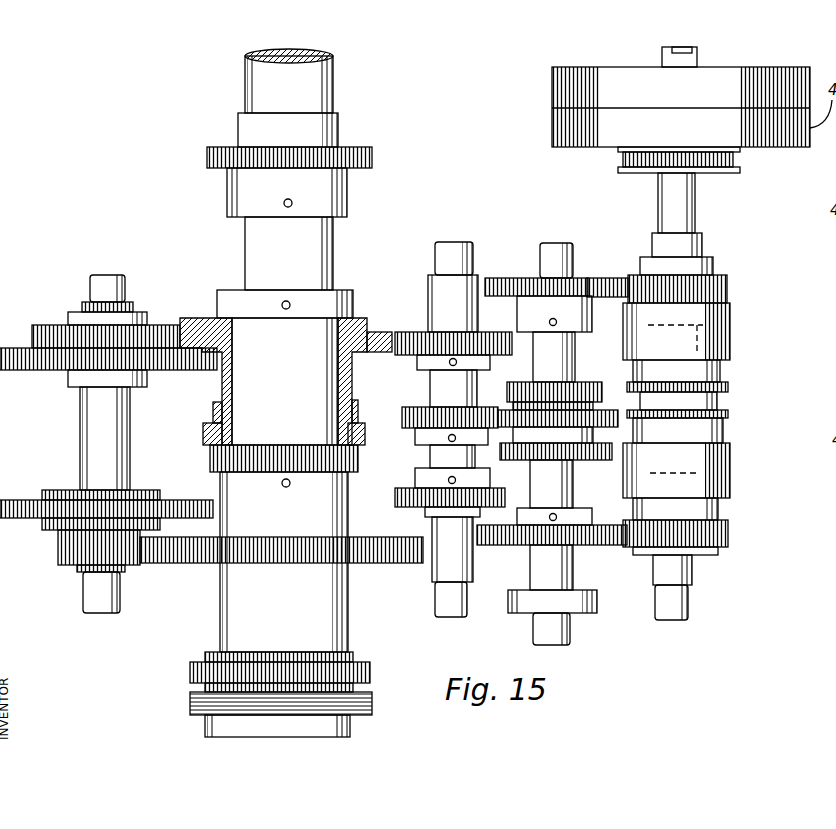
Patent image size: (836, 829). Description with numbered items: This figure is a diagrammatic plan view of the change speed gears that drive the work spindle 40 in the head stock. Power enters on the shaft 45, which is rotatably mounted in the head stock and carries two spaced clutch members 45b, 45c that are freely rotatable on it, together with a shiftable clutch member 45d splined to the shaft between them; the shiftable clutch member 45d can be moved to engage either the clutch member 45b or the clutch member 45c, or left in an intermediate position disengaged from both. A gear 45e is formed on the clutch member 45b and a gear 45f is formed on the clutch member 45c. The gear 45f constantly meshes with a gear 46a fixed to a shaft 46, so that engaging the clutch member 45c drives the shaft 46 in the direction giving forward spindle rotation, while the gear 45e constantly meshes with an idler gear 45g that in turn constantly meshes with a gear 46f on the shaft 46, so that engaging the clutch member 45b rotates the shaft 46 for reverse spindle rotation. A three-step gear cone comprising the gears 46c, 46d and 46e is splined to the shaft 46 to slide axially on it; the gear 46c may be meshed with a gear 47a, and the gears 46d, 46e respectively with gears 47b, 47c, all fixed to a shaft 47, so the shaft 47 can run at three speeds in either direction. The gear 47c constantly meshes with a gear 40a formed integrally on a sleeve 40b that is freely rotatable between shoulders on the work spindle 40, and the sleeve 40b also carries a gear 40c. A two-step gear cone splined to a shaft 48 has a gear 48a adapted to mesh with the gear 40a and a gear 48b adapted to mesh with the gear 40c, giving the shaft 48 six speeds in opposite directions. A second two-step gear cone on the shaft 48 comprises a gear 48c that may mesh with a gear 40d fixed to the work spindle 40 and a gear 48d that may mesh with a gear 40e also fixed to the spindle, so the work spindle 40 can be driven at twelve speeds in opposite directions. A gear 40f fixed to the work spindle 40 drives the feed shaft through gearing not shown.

The work spindle 40 is at (345, 618).
The gear 40a is at (378, 332).
The sleeve 40b is at (222, 385).
The gear 40c is at (213, 412).
The gear 40d is at (210, 460).
The gear 40e is at (195, 563).
The gear 40f is at (360, 147).
The shaft 45 is at (695, 220).
The clutch member 45b is at (730, 340).
The clutch member 45c is at (730, 460).
The shiftable clutch member 45d is at (728, 390).
The gear 45e is at (727, 290).
The gear 45f is at (728, 535).
The idler gear 45g is at (612, 262).
The shaft 46 is at (533, 572).
The gear 46a is at (605, 545).
The gear 46c is at (598, 460).
The gear 46d is at (610, 410).
The gear 46e is at (585, 382).
The gear 46f is at (490, 278).
The shaft 47 is at (438, 568).
The gear 47a is at (402, 507).
The gear 47b is at (406, 428).
The gear 47c is at (408, 355).
The shaft 48 is at (80, 432).
The gear 48a is at (160, 325).
The gear 48b is at (27, 370).
The gear 48c is at (28, 518).
The gear 48d is at (60, 548).